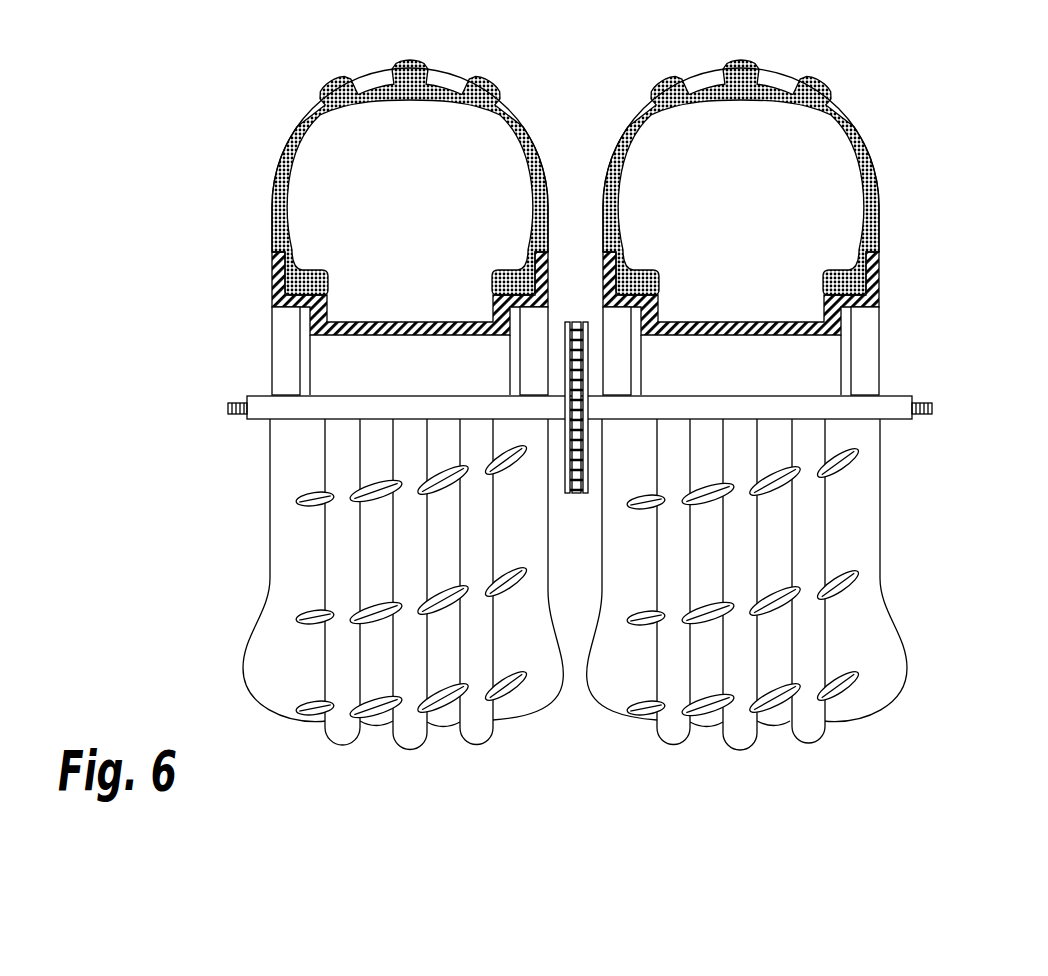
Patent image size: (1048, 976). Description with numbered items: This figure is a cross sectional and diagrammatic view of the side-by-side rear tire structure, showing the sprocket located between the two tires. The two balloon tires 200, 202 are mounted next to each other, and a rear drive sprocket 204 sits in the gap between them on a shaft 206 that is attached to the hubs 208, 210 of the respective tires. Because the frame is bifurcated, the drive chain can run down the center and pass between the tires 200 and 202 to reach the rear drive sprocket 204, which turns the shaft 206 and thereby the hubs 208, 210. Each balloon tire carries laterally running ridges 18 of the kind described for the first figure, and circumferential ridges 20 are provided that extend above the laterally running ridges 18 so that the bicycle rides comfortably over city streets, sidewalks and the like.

The laterally running ridges 18 is at (297, 617).
The circumferential ridges 20 is at (473, 755).
The tire 200 is at (441, 64).
The tire 202 is at (813, 70).
The rear drive sprocket 204 is at (568, 318).
The shaft 206 is at (813, 403).
The hub 208 is at (265, 360).
The hub 210 is at (885, 360).